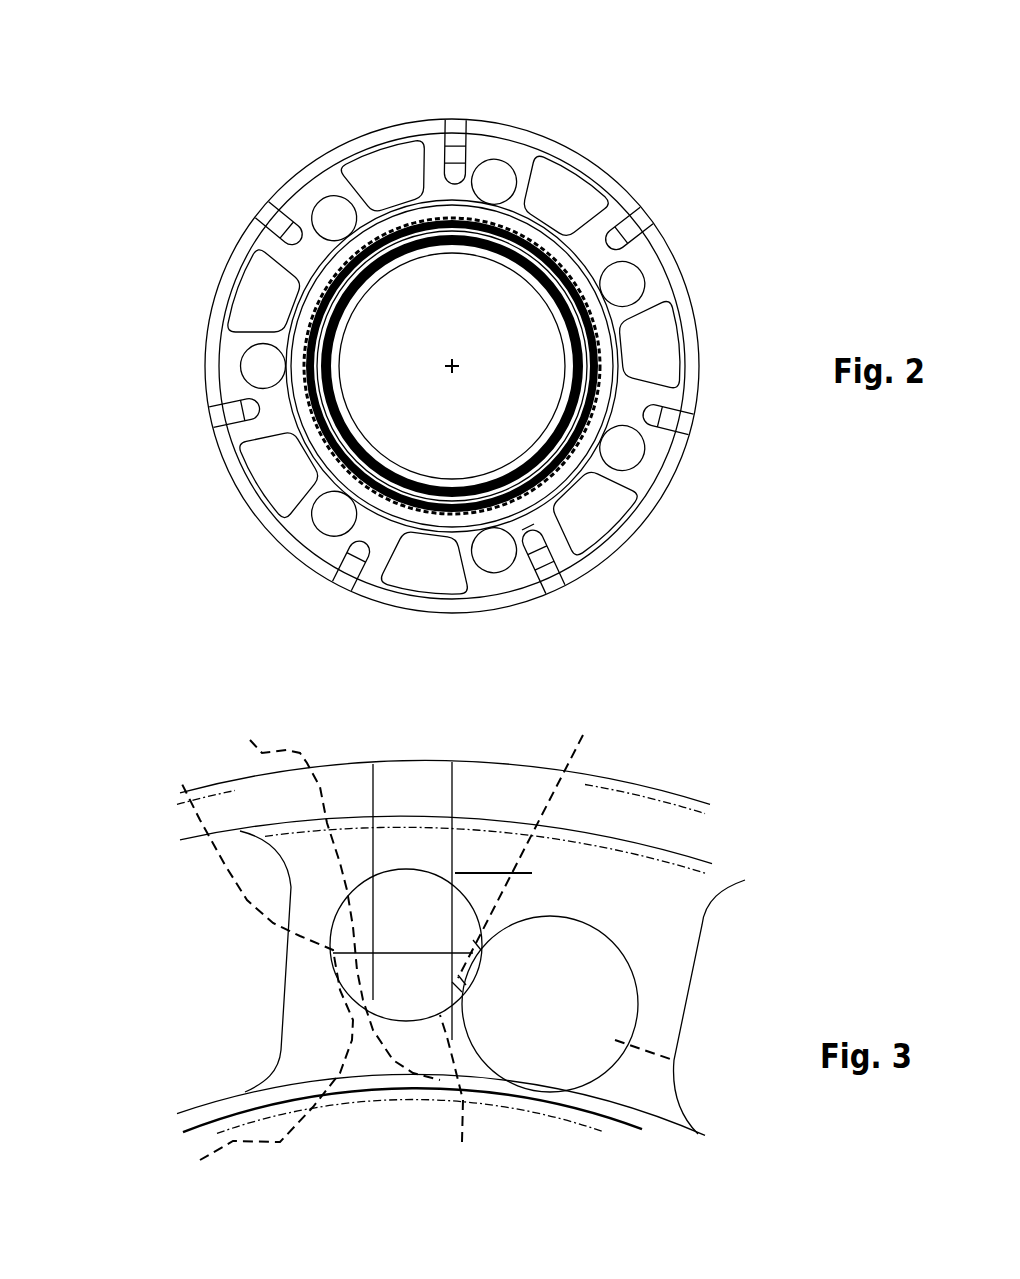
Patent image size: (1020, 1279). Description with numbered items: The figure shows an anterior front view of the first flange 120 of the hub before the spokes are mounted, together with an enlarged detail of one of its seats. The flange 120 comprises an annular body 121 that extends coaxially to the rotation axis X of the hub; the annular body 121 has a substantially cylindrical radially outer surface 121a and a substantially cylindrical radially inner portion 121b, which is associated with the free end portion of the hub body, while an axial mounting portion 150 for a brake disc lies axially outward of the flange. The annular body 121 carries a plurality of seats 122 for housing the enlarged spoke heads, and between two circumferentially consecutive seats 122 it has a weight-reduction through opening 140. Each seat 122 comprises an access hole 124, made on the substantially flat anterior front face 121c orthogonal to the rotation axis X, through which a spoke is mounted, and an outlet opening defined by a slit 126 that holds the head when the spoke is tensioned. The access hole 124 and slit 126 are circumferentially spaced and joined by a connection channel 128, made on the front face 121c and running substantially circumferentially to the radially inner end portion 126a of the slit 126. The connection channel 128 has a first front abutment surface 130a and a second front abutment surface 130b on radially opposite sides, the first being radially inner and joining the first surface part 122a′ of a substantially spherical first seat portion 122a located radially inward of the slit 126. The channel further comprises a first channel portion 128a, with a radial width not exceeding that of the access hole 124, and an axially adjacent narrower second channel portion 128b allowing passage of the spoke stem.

In FIG. 2, the flange 120 is at (378, 107).
In FIG. 3, the flange 120 is at (338, 713).
In FIG. 2, the annular body 121 is at (232, 355).
In FIG. 3, the annular body 121 is at (640, 1077).
In FIG. 2, the radially outer surface 121a is at (573, 252).
In FIG. 2, the radially inner portion 121b is at (568, 252).
In FIG. 2, the anterior front face 121c is at (215, 432).
In FIG. 3, the anterior front face 121c is at (494, 857).
In FIG. 2, the seat 122 is at (300, 226).
In FIG. 3, the first seat portion 122a is at (151, 752).
In FIG. 3, the first surface part 122a′ is at (236, 997).
In FIG. 2, the access hole 124 is at (508, 543).
In FIG. 3, the access hole 124 is at (638, 1008).
In FIG. 2, the slit 126 is at (550, 572).
In FIG. 3, the slit 126 is at (417, 852).
In FIG. 3, the radially inner end portion 126a is at (420, 1000).
In FIG. 2, the connection channel 128 is at (527, 535).
In FIG. 3, the connection channel 128 is at (457, 987).
In FIG. 3, the first channel portion 128a is at (477, 945).
In FIG. 3, the second channel portion 128b is at (462, 980).
In FIG. 3, the first front abutment surface 130a is at (469, 1106).
In FIG. 3, the second front abutment surface 130b is at (536, 833).
In FIG. 2, the weight-reduction through opening 140 is at (263, 292).
In FIG. 3, the weight-reduction through opening 140 is at (265, 961).
In FIG. 2, the axial mounting portion 150 is at (598, 338).
In FIG. 2, the rotation axis X is at (453, 366).